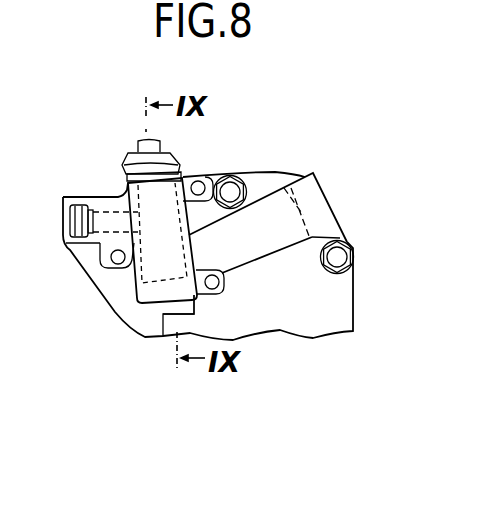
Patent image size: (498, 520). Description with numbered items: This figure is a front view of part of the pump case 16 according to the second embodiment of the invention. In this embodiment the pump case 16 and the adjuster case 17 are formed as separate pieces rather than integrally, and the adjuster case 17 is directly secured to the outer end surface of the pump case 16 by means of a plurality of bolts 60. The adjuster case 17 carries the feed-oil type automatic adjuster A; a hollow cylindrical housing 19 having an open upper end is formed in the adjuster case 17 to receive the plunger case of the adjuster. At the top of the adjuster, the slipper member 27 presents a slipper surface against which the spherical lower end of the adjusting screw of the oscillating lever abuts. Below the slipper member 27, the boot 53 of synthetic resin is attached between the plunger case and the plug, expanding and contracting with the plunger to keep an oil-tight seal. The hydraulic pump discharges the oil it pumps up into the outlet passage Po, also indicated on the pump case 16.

The pump case 16 is at (345, 312).
The adjuster case 17 is at (196, 312).
The housing 19 is at (191, 246).
The slipper member 27 is at (161, 142).
The boot 53 is at (127, 163).
The bolts 60 is at (190, 192).
The automatic adjuster A is at (179, 171).
The outlet passage Po is at (322, 188).